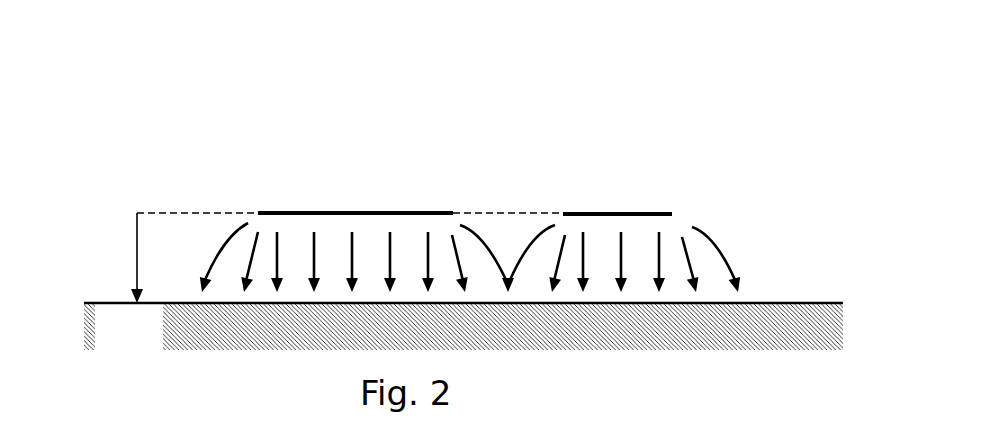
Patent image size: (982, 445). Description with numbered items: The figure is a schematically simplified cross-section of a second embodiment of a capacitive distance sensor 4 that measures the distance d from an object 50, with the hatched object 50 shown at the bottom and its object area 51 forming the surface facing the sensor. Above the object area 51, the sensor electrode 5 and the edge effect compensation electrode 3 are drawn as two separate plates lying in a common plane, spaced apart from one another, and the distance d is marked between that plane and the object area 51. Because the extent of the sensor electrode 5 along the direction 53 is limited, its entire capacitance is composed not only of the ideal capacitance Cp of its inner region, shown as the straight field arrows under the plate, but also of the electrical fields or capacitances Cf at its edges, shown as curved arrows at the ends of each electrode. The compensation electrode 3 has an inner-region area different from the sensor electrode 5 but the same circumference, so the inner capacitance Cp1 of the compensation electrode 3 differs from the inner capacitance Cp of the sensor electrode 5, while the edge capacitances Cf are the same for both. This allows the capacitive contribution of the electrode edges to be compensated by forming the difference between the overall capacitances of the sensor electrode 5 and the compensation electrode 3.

The capacitive distance sensor 4 is at (448, 82).
The edge effect compensation electrode 3 is at (608, 215).
The sensor electrode 5 is at (357, 212).
The direction 53 is at (148, 212).
The object area 51 is at (100, 302).
The object 50 is at (139, 347).
The distance d is at (137, 248).
The edge capacitance Cf is at (209, 237).
The inner-region capacitance of the sensor electrode Cp is at (345, 240).
The inner-region capacitance of the compensation electrode Cp1 is at (618, 220).